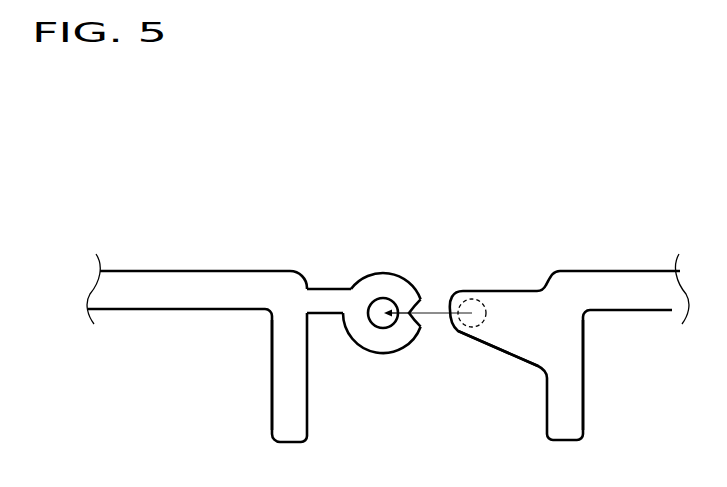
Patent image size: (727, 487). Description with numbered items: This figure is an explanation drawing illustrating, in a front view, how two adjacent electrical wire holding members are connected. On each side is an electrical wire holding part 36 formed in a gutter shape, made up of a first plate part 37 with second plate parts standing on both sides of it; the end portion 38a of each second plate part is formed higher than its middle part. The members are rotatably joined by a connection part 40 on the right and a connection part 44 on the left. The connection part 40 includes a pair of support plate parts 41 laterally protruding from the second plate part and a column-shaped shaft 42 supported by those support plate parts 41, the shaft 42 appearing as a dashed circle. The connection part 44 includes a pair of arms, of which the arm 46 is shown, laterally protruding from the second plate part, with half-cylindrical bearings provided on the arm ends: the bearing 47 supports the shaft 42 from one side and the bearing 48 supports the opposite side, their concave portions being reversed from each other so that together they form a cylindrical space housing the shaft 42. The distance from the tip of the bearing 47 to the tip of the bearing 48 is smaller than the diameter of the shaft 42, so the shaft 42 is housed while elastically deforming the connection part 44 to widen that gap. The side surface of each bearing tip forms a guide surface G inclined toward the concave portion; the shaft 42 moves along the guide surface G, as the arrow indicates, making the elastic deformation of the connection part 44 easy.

The electrical wire holding part 36 is at (270, 368).
The first plate part 37 is at (203, 300).
The end portion of the second plate part 38a is at (278, 397).
The connection part 40 is at (523, 290).
The support plate part 41 is at (510, 343).
The shaft 42 is at (477, 296).
The connection part 44 is at (370, 313).
The arm 46 is at (323, 311).
The bearing 47 is at (382, 282).
The bearing 48 is at (381, 348).
The guide surface G is at (413, 304).